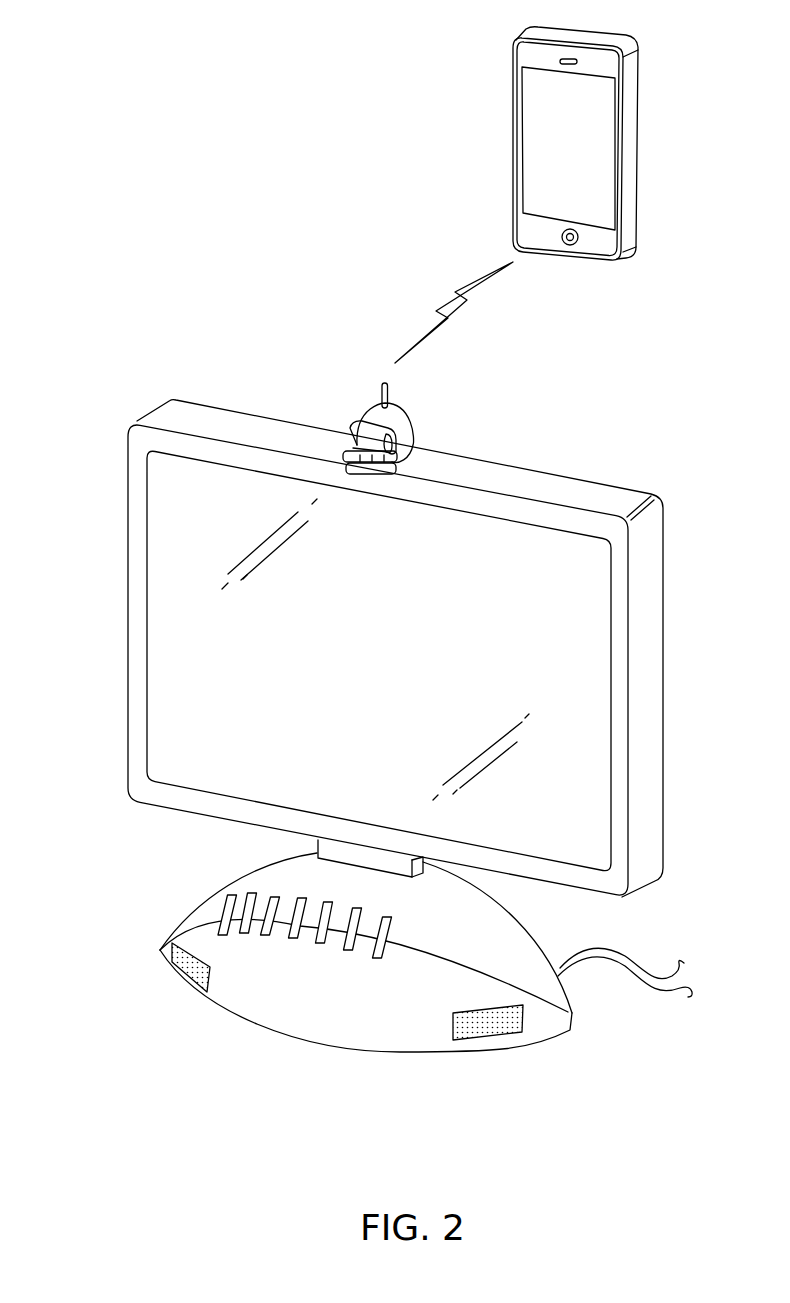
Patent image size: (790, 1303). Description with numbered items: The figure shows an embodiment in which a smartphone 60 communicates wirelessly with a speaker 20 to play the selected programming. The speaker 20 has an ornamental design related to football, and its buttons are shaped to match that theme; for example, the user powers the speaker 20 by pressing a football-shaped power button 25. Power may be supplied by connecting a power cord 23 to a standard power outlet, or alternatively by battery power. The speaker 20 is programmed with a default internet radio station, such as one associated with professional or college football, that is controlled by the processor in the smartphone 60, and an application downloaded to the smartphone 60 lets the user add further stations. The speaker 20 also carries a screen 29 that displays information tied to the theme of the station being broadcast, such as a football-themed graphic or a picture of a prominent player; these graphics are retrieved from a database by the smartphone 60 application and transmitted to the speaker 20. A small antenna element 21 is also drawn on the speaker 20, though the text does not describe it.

The speaker 20 is at (548, 487).
The helmet-shaped antenna indicator 21 is at (378, 395).
The power cord 23 is at (645, 990).
The power button 25 is at (248, 878).
The screen 29 is at (163, 555).
The smartphone 60 is at (542, 160).